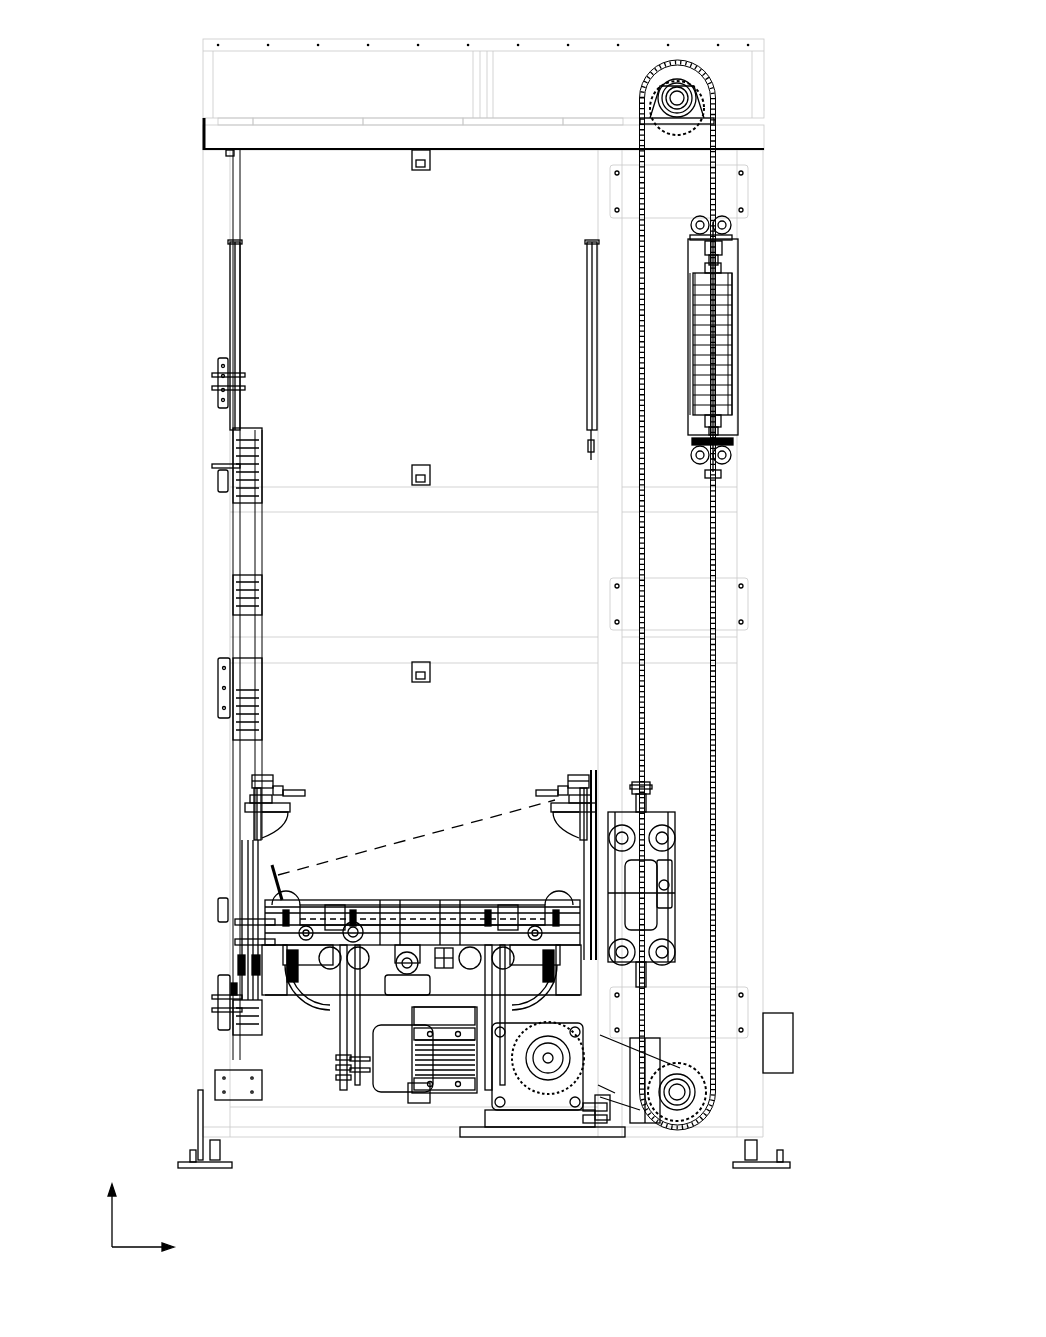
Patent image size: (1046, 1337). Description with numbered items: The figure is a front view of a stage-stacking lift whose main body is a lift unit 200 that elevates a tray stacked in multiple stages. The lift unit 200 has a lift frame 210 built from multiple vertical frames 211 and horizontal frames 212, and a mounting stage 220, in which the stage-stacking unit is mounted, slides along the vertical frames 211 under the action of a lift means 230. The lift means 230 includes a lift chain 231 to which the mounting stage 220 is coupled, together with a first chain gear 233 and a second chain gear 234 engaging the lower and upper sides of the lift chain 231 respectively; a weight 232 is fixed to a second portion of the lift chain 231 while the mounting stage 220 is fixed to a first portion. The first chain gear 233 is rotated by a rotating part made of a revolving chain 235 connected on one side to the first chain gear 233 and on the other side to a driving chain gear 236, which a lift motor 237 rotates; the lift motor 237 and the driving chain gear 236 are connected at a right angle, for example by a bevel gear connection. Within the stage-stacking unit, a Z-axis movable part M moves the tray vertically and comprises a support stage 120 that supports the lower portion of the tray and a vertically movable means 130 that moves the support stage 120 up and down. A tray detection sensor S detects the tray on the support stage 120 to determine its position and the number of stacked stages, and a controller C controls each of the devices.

The lift unit 200 is at (778, 900).
The lift frame 210 is at (120, 208).
The vertical frames 211 is at (222, 204).
The horizontal frames 212 is at (228, 136).
The mounting stage 220 is at (508, 990).
The lift means 230 is at (680, 1148).
The lift chain 231 is at (643, 753).
The weight 232 is at (740, 343).
The first chain gear 233 is at (706, 1087).
The second chain gear 234 is at (680, 72).
The revolving chain 235 is at (592, 1105).
The driving chain gear 236 is at (548, 1085).
The lift motor 237 is at (394, 1065).
The support stage 120 is at (335, 910).
The vertically movable means 130 is at (342, 1093).
The tray detection sensor S is at (258, 870).
The controller C is at (795, 1043).
The Z-axis movable part M is at (284, 1248).